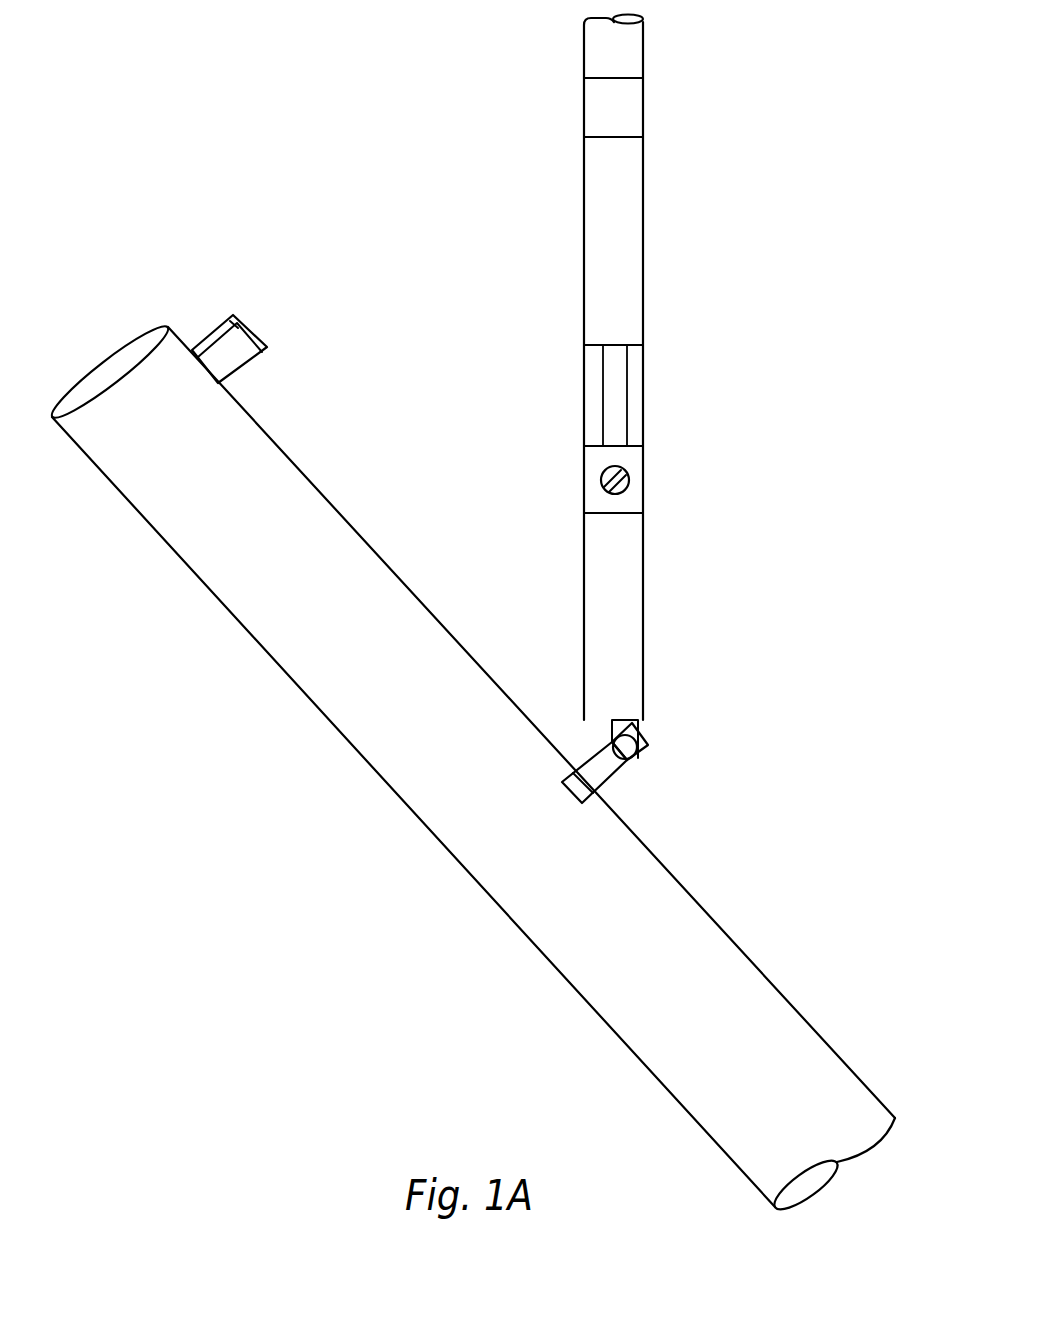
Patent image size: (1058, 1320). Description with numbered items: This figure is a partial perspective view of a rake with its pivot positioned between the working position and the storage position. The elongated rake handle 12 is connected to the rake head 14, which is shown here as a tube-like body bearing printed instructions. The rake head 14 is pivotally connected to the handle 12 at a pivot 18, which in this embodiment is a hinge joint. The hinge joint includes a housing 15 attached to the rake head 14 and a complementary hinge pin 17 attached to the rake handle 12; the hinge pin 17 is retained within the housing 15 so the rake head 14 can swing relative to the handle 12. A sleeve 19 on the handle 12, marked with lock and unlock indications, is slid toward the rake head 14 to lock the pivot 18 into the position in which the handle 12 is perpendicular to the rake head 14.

The handle 12 is at (585, 228).
The rake head 14 is at (339, 731).
The housing 15 is at (609, 772).
The hinge pin 17 is at (610, 738).
The pivot 18 is at (640, 749).
The sleeve 19 is at (646, 611).